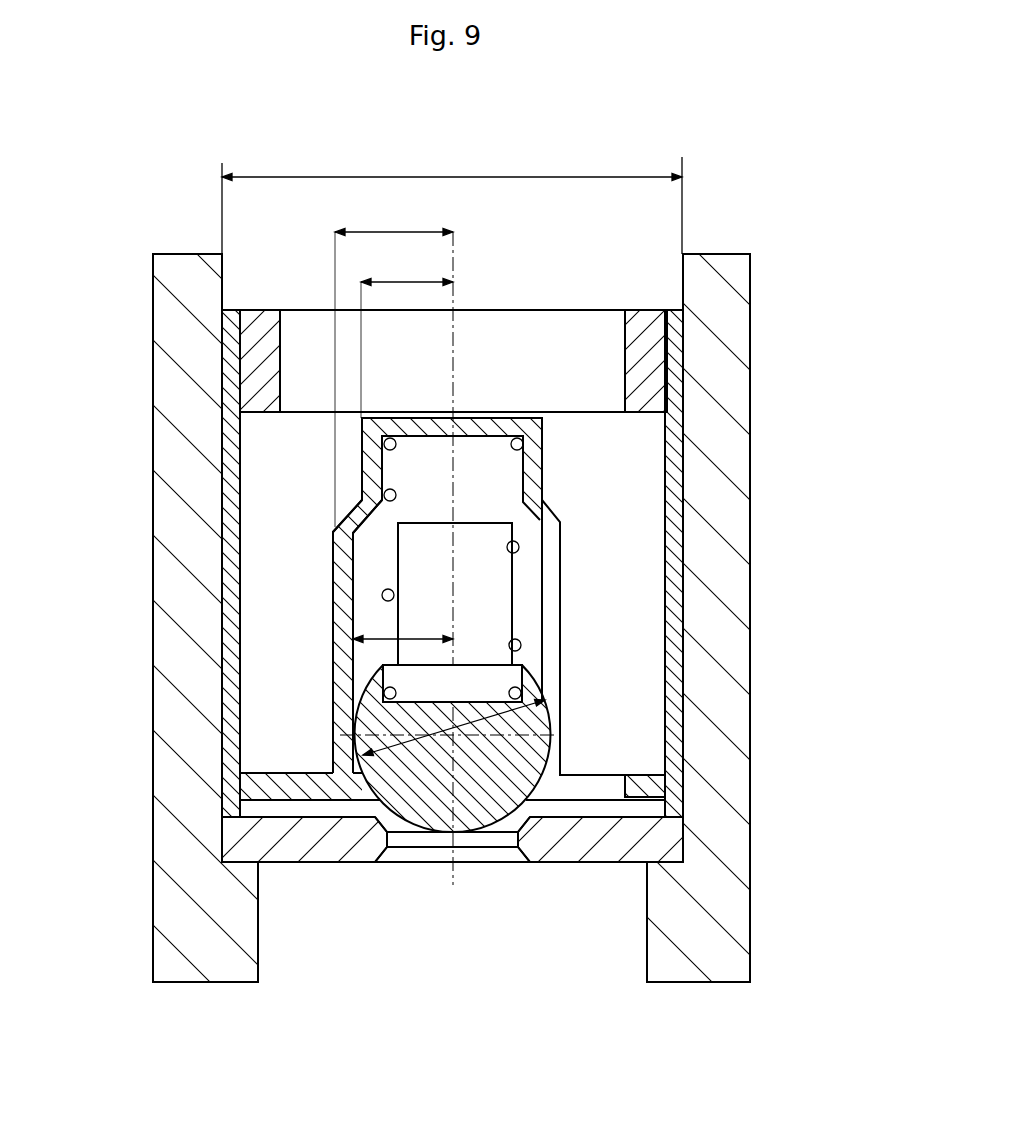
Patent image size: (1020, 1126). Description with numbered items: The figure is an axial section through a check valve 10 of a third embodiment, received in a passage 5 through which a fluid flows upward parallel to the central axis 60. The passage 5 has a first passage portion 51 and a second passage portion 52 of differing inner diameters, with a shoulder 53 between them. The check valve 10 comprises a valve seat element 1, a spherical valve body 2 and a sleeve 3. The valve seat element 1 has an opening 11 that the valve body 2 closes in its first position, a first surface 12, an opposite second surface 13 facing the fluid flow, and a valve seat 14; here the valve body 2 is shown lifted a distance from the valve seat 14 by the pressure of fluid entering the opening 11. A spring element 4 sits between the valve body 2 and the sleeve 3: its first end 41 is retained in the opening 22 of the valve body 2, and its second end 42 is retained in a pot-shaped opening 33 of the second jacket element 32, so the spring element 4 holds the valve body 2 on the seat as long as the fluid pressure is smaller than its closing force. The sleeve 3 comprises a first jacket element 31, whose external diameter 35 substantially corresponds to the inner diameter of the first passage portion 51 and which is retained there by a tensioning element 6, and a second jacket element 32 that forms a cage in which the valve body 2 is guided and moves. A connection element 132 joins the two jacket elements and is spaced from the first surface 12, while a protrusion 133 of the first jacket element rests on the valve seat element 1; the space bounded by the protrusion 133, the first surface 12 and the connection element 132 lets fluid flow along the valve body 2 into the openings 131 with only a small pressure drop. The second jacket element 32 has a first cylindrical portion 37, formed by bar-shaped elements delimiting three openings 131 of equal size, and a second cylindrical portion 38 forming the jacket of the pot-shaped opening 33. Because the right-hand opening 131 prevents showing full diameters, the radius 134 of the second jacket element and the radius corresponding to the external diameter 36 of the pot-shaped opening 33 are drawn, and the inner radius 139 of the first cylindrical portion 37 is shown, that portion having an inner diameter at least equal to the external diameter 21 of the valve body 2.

The valve seat element 1 is at (572, 832).
The valve body 2 is at (437, 775).
The sleeve 3 is at (228, 445).
The spring element 4 is at (513, 547).
The passage 5 is at (510, 618).
The tensioning element 6 is at (252, 342).
The check valve 10 is at (112, 165).
The opening 11 is at (492, 853).
The first surface 12 is at (340, 822).
The second surface 13 is at (603, 855).
The valve seat 14 is at (524, 820).
The external diameter 21 is at (363, 755).
The opening 22 is at (353, 704).
The first jacket element 31 is at (232, 546).
The second jacket element 32 is at (348, 617).
The pot-shaped opening 33 is at (537, 418).
The external diameter 35 is at (284, 176).
The external diameter 36 is at (417, 282).
The first cylindrical portion 37 is at (345, 682).
The second cylindrical portion 38 is at (373, 477).
The first end 41 is at (521, 692).
The second end 42 is at (522, 440).
The first passage portion 51 is at (190, 402).
The second passage portion 52 is at (177, 967).
The shoulder 53 is at (227, 861).
The central axis 60 is at (452, 885).
The opening 131 is at (562, 581).
The connection element 132 is at (650, 788).
The protrusion 133 is at (672, 809).
The radius 134 is at (409, 232).
The inner radius 139 is at (453, 639).